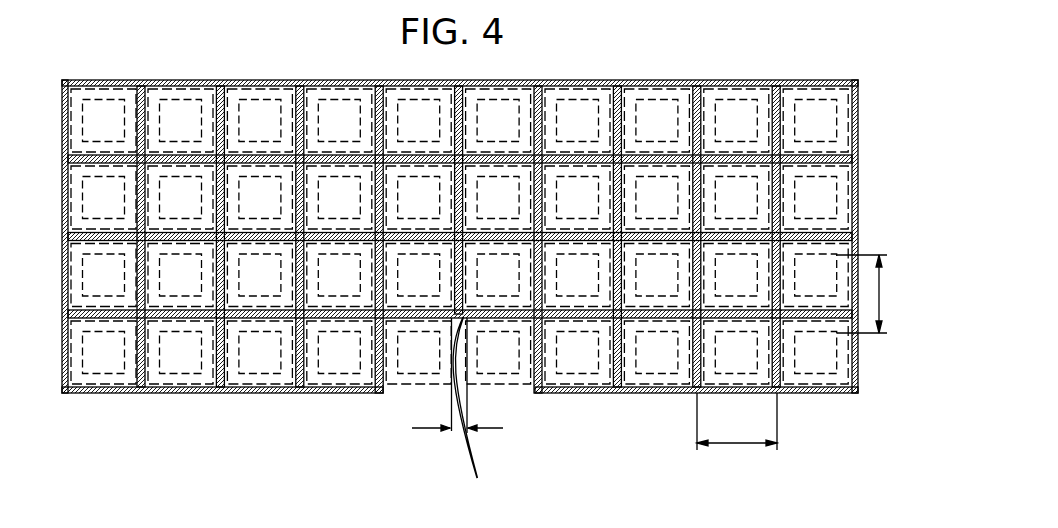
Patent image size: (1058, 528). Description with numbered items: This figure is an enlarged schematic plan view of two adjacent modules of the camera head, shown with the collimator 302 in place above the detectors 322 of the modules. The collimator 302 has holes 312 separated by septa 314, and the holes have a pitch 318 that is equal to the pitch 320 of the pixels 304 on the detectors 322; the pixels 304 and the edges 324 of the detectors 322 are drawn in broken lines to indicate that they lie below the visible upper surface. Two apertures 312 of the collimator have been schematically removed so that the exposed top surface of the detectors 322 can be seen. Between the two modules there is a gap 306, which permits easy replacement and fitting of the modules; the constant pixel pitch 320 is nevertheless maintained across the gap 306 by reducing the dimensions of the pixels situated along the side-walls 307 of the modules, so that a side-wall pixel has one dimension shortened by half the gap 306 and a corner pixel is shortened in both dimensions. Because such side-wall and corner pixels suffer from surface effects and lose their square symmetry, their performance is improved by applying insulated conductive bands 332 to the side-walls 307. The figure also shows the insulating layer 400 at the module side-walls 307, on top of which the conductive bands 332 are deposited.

The collimator 302 is at (205, 396).
The pixels 304 is at (820, 113).
The gap 306 is at (503, 428).
The side-walls 307 is at (477, 410).
The holes 312 is at (95, 379).
The septa 314 is at (145, 377).
The pitch of the collimator holes 318 is at (734, 444).
The pixel pitch 320 is at (886, 297).
The detectors 322 is at (710, 98).
The edges of detectors 324 is at (507, 384).
The insulated conductive bands 332 is at (400, 390).
The insulating layer 400 is at (417, 392).